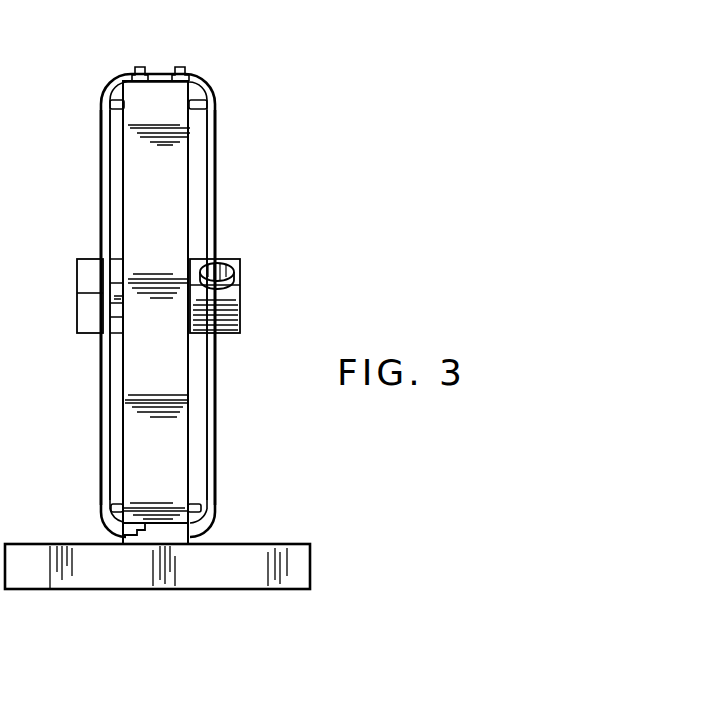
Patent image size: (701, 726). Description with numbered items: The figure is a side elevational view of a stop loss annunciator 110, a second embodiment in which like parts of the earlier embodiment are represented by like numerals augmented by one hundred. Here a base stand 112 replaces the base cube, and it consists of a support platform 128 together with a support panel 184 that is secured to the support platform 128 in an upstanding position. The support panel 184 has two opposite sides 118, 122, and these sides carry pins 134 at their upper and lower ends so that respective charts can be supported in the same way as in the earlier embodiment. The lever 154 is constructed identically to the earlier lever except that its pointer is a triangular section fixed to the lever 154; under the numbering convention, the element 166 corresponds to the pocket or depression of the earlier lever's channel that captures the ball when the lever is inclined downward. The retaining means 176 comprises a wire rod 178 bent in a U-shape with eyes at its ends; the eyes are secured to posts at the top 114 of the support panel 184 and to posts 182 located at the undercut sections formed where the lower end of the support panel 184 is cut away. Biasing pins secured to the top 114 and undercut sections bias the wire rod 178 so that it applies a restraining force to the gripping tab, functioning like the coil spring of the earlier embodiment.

The stop loss annunciator 110 is at (262, 98).
The base stand 112 is at (119, 219).
The top 114 is at (155, 80).
The side 118 is at (123, 135).
The side 122 is at (192, 155).
The support platform 128 is at (300, 552).
The pins 134 is at (116, 99).
The lever 154 is at (68, 307).
The adjustment knob 166 is at (225, 258).
The retaining means 176 is at (98, 400).
The wire rod 178 is at (103, 358).
The posts 182 is at (122, 540).
The support panel 184 is at (180, 220).